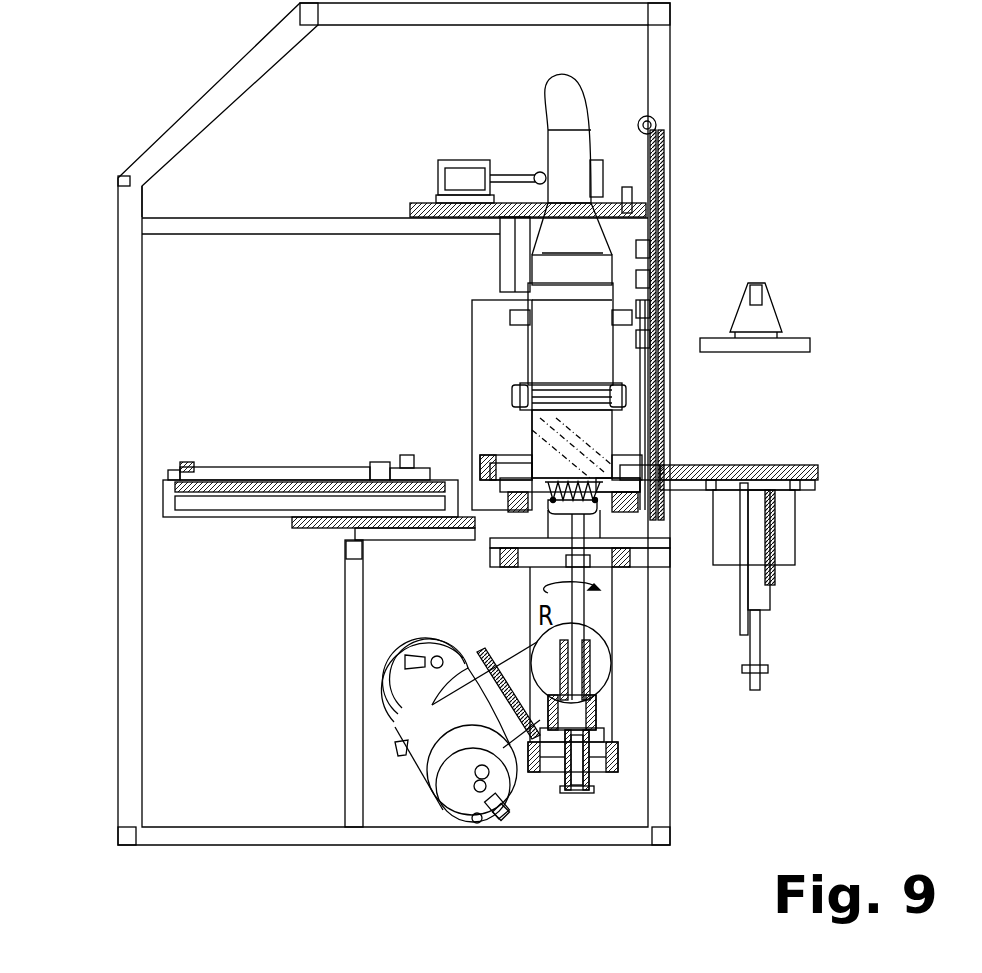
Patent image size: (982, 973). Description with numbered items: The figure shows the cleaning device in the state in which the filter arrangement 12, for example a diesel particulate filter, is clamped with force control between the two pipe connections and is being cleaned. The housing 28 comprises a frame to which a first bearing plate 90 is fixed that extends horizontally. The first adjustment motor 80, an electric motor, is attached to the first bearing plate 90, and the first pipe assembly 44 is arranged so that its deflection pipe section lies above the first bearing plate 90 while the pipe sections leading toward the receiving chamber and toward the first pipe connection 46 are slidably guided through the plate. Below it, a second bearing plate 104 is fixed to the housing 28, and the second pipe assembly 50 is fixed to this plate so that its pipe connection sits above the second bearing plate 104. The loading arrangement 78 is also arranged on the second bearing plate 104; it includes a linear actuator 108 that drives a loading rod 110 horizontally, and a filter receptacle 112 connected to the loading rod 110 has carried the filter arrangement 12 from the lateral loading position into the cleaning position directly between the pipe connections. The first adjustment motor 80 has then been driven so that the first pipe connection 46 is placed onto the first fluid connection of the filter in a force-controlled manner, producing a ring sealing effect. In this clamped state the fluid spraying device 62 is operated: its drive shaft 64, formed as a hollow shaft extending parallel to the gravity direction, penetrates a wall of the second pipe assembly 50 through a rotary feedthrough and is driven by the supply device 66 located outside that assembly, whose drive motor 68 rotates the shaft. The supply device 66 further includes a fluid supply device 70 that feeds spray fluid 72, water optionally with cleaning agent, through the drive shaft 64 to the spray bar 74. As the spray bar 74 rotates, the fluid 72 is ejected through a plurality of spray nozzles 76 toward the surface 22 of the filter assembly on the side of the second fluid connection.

The filter arrangement 12 is at (595, 425).
The surface of the filter assembly 22 is at (552, 488).
The housing 28 is at (131, 740).
The first pipe assembly 44 is at (600, 92).
The first pipe connection 46 is at (522, 405).
The second pipe assembly 50 is at (508, 630).
The fluid spraying device 62 is at (590, 800).
The drive shaft 64 is at (585, 612).
The supply device 66 is at (538, 788).
The drive motor 68 is at (598, 735).
The fluid supply device 70 is at (556, 794).
The fluid 72 is at (556, 480).
The spray bar 74 is at (557, 503).
The spray nozzles 76 is at (600, 505).
The loading arrangement 78 is at (280, 332).
The first adjustment motor 80 is at (462, 177).
The first bearing plate 90 is at (248, 222).
The second bearing plate 104 is at (345, 536).
The linear actuator 108 is at (187, 500).
The loading rod 110 is at (250, 467).
The filter receptacle 112 is at (628, 470).